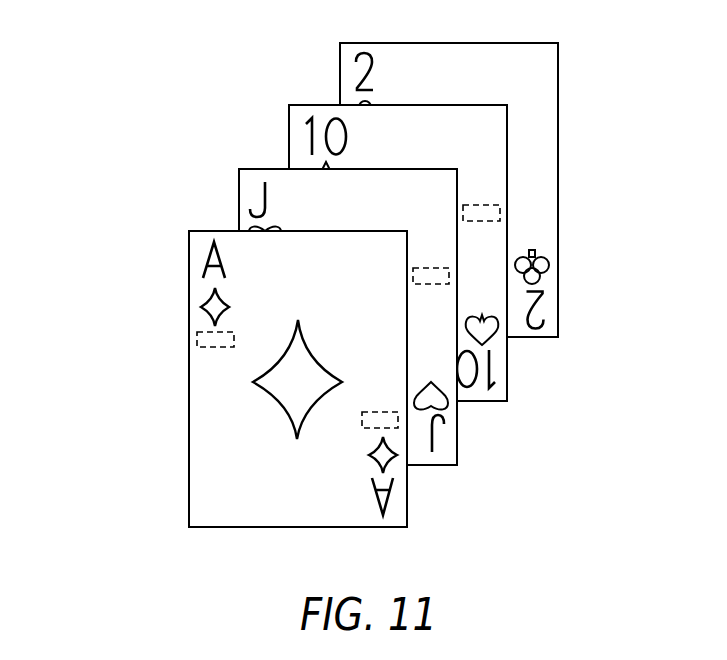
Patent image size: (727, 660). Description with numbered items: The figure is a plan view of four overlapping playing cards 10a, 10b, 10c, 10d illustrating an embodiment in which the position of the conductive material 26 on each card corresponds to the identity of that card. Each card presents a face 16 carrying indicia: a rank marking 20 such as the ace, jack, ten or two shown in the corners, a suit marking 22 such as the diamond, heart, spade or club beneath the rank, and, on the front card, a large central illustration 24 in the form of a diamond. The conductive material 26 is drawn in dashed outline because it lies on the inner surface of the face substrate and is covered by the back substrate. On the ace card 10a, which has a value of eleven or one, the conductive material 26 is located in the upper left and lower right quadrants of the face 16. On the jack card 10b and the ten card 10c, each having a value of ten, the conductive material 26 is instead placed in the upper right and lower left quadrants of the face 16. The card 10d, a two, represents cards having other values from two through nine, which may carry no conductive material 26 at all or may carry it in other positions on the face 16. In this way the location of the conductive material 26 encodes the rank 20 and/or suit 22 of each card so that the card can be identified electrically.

The playing card 10a is at (189, 450).
The playing card 10b is at (239, 202).
The playing card 10c is at (289, 137).
The playing card 10d is at (340, 73).
The outer surface 16 is at (278, 501).
The rank marking 20 is at (197, 260).
The suit marking 22 is at (200, 293).
The illustration 24 is at (233, 378).
The conductive material 26 is at (197, 339).